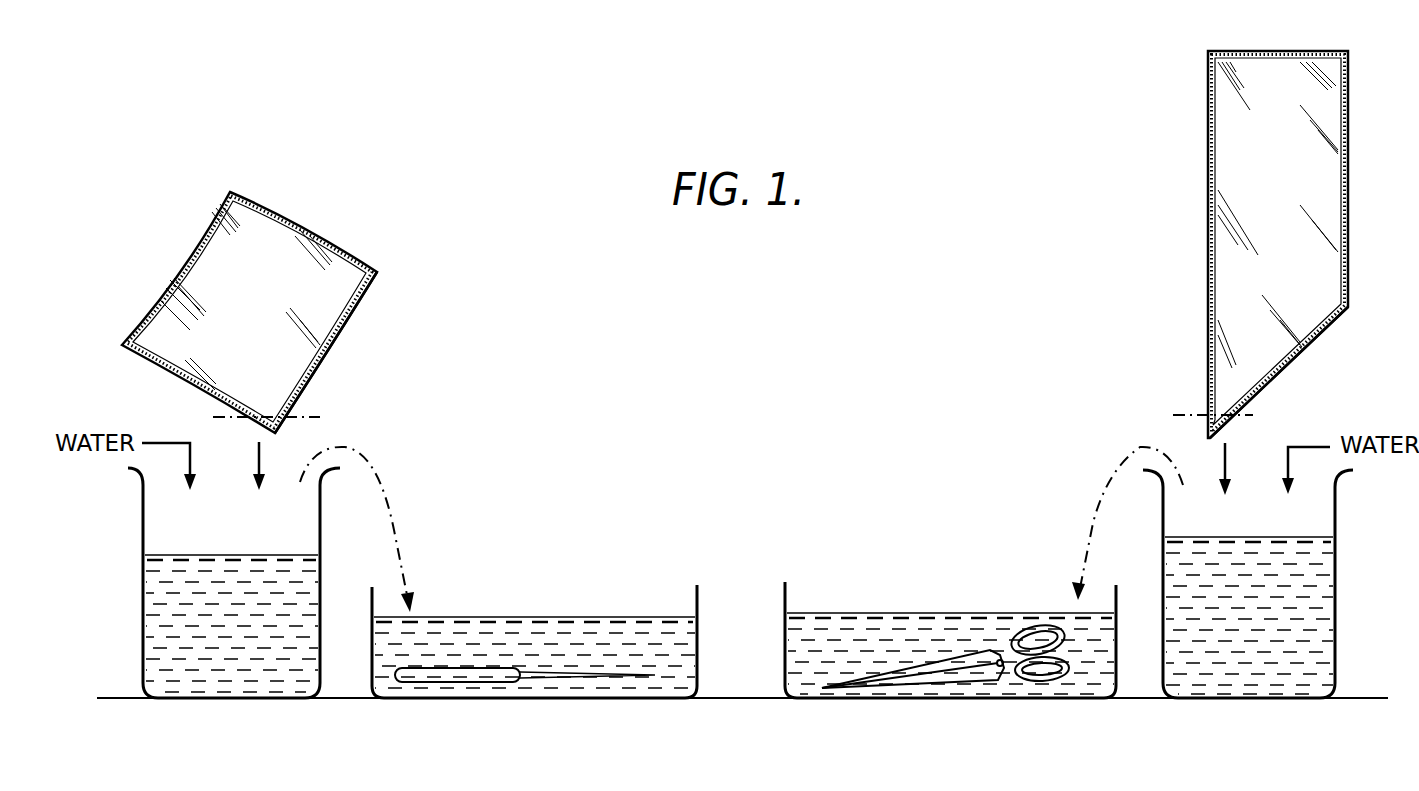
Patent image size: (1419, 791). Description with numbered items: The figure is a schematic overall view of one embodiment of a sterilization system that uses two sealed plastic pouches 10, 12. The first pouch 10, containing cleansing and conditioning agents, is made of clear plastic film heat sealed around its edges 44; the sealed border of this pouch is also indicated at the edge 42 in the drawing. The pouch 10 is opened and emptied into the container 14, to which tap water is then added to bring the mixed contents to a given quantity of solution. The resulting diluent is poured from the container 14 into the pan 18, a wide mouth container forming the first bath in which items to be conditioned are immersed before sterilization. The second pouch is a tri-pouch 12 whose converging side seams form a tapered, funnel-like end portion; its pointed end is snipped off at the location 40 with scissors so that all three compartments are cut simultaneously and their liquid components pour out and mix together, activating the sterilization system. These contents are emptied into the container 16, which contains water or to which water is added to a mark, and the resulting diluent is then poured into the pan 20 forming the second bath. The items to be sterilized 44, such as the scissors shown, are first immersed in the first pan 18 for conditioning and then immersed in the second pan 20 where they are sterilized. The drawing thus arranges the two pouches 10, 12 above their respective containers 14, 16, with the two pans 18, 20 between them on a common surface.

The sealed plastic pouch 10 is at (298, 250).
The tri-pouch 12 is at (1226, 172).
The container 14 is at (143, 565).
The container 16 is at (1337, 513).
The pan 18 is at (698, 598).
The pan 20 is at (785, 592).
The snip-off point 40 is at (1188, 413).
The edge of sheet 42 is at (338, 310).
The heat sealed edges 44 is at (600, 632).